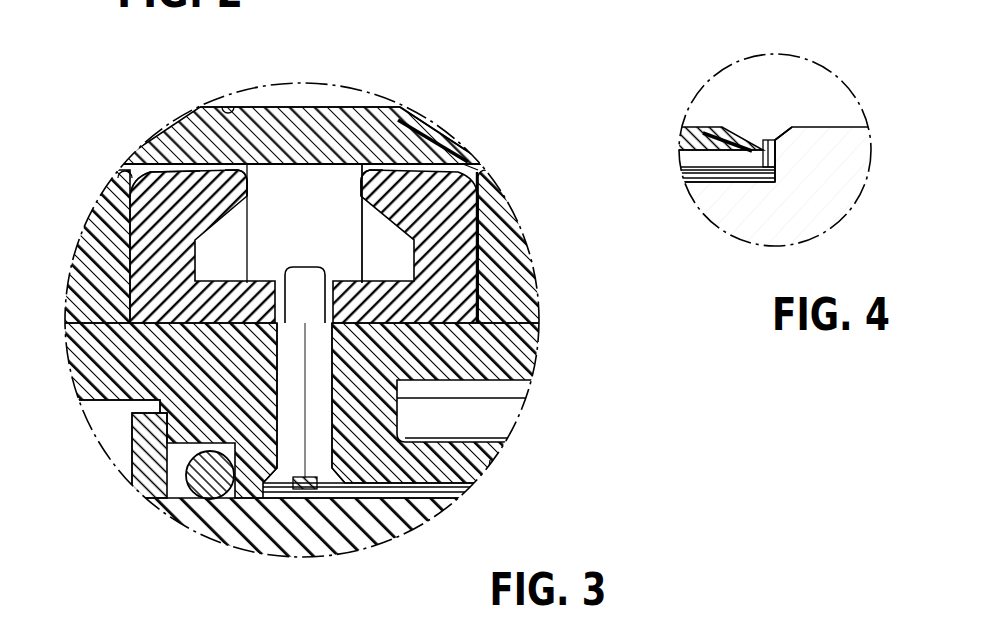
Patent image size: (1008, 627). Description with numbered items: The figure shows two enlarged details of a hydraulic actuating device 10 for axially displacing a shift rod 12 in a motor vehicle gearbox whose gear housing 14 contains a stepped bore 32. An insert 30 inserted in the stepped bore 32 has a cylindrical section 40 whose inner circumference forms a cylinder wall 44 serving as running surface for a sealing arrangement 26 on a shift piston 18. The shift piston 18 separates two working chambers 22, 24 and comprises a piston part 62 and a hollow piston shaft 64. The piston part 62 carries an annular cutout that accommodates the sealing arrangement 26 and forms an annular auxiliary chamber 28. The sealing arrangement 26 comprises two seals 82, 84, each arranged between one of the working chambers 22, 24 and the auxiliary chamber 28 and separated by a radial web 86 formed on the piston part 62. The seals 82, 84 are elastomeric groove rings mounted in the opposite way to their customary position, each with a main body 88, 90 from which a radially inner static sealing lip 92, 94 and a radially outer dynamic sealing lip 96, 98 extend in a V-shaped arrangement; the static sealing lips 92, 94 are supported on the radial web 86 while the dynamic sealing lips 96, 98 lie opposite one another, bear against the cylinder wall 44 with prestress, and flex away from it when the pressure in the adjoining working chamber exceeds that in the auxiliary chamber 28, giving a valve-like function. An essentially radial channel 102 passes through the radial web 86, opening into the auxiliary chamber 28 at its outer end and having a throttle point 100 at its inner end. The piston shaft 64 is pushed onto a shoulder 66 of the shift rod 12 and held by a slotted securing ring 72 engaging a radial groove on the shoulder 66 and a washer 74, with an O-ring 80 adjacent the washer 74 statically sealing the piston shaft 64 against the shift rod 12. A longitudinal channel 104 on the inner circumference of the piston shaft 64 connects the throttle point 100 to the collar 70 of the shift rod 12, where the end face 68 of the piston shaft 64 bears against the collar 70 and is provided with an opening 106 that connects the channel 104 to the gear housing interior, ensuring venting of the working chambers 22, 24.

In FIG. 3, the hydraulic actuating device 10 is at (363, 195).
In FIG. 3, the shift rod 12 is at (240, 527).
In FIG. 4, the shift rod 12 is at (848, 148).
In FIG. 3, the gear housing 14 is at (282, 100).
In FIG. 3, the shift piston 18 is at (510, 222).
In FIG. 4, the shift piston 18 is at (702, 149).
In FIG. 3, the working chamber 22 is at (466, 164).
In FIG. 3, the working chamber 24 is at (140, 178).
In FIG. 3, the sealing arrangement 26 is at (157, 170).
In FIG. 3, the auxiliary chamber 28 is at (368, 106).
In FIG. 3, the insert 30 is at (432, 120).
In FIG. 3, the stepped bore 32 is at (228, 106).
In FIG. 3, the cylindrical section 40 is at (300, 97).
In FIG. 3, the cylinder wall 44 is at (455, 152).
In FIG. 3, the piston part 62 is at (107, 273).
In FIG. 3, the piston shaft 64 is at (482, 461).
In FIG. 4, the piston shaft 64 is at (700, 141).
In FIG. 3, the shoulder 66 is at (470, 490).
In FIG. 4, the shoulder 66 is at (706, 178).
In FIG. 4, the end face 68 is at (778, 152).
In FIG. 4, the collar 70 is at (755, 184).
In FIG. 3, the slotted securing ring 72 is at (117, 437).
In FIG. 3, the washer 74 is at (133, 469).
In FIG. 3, the O-ring 80 is at (205, 500).
In FIG. 3, the seal 82 is at (503, 234).
In FIG. 3, the seal 84 is at (84, 234).
In FIG. 3, the radial web 86 is at (289, 315).
In FIG. 3, the main body 88 is at (448, 249).
In FIG. 3, the main body 90 is at (163, 243).
In FIG. 3, the static sealing lip 92 is at (353, 281).
In FIG. 3, the static sealing lip 94 is at (250, 281).
In FIG. 3, the dynamic sealing lip 96 is at (364, 192).
In FIG. 3, the dynamic sealing lip 98 is at (243, 192).
In FIG. 3, the throttle point 100 is at (302, 454).
In FIG. 3, the channel 102 is at (326, 390).
In FIG. 3, the channel 104 is at (408, 500).
In FIG. 4, the channel 104 is at (697, 178).
In FIG. 4, the opening 106 is at (762, 148).